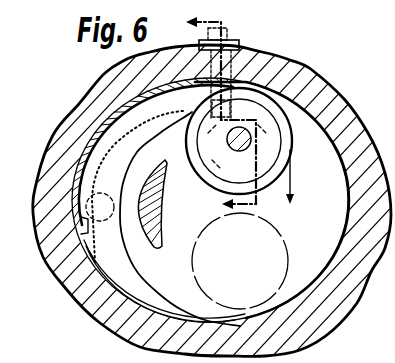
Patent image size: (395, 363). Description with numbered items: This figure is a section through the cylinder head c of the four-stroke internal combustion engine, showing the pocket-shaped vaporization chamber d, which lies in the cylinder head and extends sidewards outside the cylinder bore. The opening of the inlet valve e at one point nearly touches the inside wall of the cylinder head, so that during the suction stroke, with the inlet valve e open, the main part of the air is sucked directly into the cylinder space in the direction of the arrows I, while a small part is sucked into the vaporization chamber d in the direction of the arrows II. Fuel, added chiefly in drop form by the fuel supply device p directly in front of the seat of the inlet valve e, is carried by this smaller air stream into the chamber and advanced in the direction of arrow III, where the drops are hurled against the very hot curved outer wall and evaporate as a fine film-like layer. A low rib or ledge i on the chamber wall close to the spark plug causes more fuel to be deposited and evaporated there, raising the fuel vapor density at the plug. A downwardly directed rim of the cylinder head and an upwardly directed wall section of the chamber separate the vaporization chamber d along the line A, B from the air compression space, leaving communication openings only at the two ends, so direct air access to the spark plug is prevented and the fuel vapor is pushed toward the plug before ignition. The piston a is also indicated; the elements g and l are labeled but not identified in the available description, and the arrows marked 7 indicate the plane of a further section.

The piston a is at (197, 180).
The cylinder head c is at (296, 102).
The vaporization chamber d is at (128, 120).
The inlet valve e is at (292, 133).
The rotor g is at (280, 236).
The rib or ledge i is at (72, 229).
The port l is at (100, 220).
The fuel supply device p is at (240, 46).
The line A, B A is at (169, 151).
The line A B is at (171, 262).
The arrows I is at (292, 183).
The arrows II is at (197, 112).
The arrow III is at (107, 163).
The section line 7- 7 is at (214, 110).